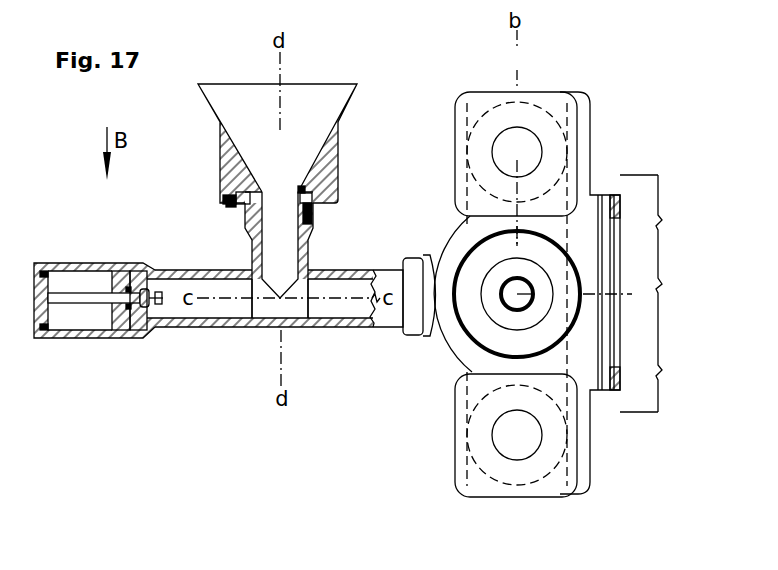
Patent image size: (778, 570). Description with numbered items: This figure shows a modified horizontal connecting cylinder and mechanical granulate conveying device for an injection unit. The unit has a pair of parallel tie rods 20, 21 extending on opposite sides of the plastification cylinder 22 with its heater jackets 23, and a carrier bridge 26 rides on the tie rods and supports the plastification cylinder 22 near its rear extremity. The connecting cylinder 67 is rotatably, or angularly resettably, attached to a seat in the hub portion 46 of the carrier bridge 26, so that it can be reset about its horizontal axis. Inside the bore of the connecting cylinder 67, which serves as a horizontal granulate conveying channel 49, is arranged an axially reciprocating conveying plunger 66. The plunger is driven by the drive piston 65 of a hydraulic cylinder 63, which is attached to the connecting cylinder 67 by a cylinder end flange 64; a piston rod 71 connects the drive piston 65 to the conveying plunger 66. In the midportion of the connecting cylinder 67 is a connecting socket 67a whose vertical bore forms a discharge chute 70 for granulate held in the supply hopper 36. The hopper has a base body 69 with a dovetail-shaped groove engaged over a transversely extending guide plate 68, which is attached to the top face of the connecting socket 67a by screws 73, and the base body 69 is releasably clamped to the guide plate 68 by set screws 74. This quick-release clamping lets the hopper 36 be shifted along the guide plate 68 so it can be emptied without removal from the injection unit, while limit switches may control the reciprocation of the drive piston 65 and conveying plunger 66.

The tie rod 20 is at (518, 437).
The tie rod 21 is at (516, 145).
The plastification cylinder 22 is at (515, 265).
The heater jacket 23 is at (533, 335).
The carrier bridge 26 is at (457, 343).
The supply hopper 36 is at (307, 100).
The hub portion 46 is at (430, 262).
The granulate conveying channel 49 is at (332, 294).
The hydraulic cylinder 63 is at (88, 263).
The cylinder end flange 64 is at (134, 272).
The drive piston 65 is at (43, 272).
The conveying plunger 66 is at (180, 307).
The connecting cylinder 67 is at (217, 323).
The connecting socket 67a is at (251, 246).
The guide plate 68 is at (240, 191).
The base body 69 is at (327, 148).
The discharge chute 70 is at (285, 239).
The piston rod 71 is at (96, 303).
The screw 73 is at (318, 190).
The set screw 74 is at (224, 204).